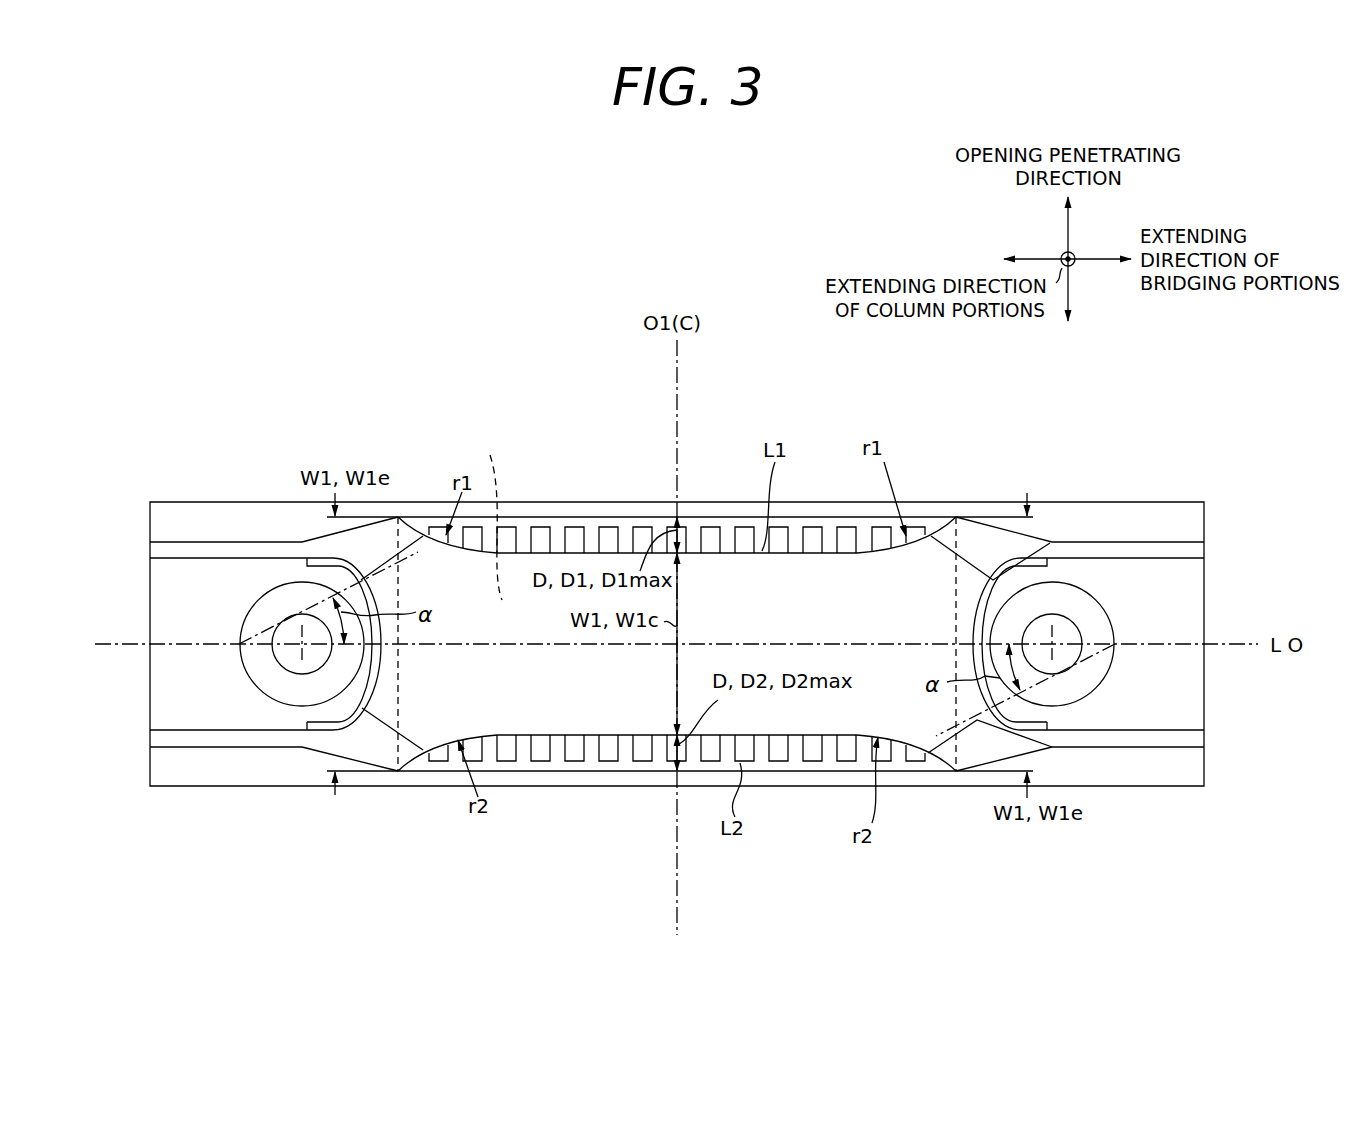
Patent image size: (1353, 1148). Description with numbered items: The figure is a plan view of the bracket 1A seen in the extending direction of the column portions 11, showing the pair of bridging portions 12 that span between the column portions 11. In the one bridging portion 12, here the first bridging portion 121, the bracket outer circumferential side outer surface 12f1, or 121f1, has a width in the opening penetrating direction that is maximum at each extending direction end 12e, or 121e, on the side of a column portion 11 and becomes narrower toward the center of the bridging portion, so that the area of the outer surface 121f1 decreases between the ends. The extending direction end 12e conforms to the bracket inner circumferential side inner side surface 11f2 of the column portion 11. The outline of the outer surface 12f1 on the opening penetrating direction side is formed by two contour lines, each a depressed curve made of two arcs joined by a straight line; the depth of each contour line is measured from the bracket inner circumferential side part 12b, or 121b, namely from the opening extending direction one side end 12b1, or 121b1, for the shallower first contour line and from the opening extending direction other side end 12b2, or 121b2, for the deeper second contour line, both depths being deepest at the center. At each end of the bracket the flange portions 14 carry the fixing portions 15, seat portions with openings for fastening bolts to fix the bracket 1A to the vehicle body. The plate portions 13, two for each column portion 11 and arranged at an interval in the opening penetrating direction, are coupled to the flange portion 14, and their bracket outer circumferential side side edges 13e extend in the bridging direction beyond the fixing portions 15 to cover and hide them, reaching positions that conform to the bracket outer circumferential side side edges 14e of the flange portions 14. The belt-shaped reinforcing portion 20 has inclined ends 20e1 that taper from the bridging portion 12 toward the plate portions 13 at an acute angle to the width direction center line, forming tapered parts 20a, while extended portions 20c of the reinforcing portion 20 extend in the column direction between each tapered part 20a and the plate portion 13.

The bracket 1A is at (677, 597).
The column portion 11 is at (394, 773).
The bridging portion 12 is at (677, 636).
The first bridging portion 121 is at (677, 636).
The bracket inner circumferential side part 12b is at (677, 602).
The bracket inner circumferential side part 121b is at (588, 549).
The opening extending direction one side end 12b1 is at (677, 474).
The opening extending direction one side end 121b1 is at (706, 551).
The opening extending direction other side end 12b2 is at (677, 792).
The opening extending direction other side end 121b2 is at (600, 763).
The extending direction end 12e is at (677, 644).
The bracket inner circumferential side inner side surface 11f2 is at (677, 644).
The extending direction end 121e is at (956, 627).
The bracket outer circumferential side outer surface 12f1 is at (680, 658).
The bracket outer circumferential side outer surface 121f1 is at (918, 897).
The plate portion 13 is at (668, 616).
The bracket outer circumferential side side edge 13e is at (215, 552).
The flange portion 14 is at (677, 641).
The bracket outer circumferential side side edge 14e is at (150, 690).
The fixing portion 15 is at (256, 663).
The reinforcing portion 20 is at (688, 638).
The tapered part 20a is at (383, 597).
The extended portion 20c is at (337, 566).
The inclined end 20e1 is at (363, 583).